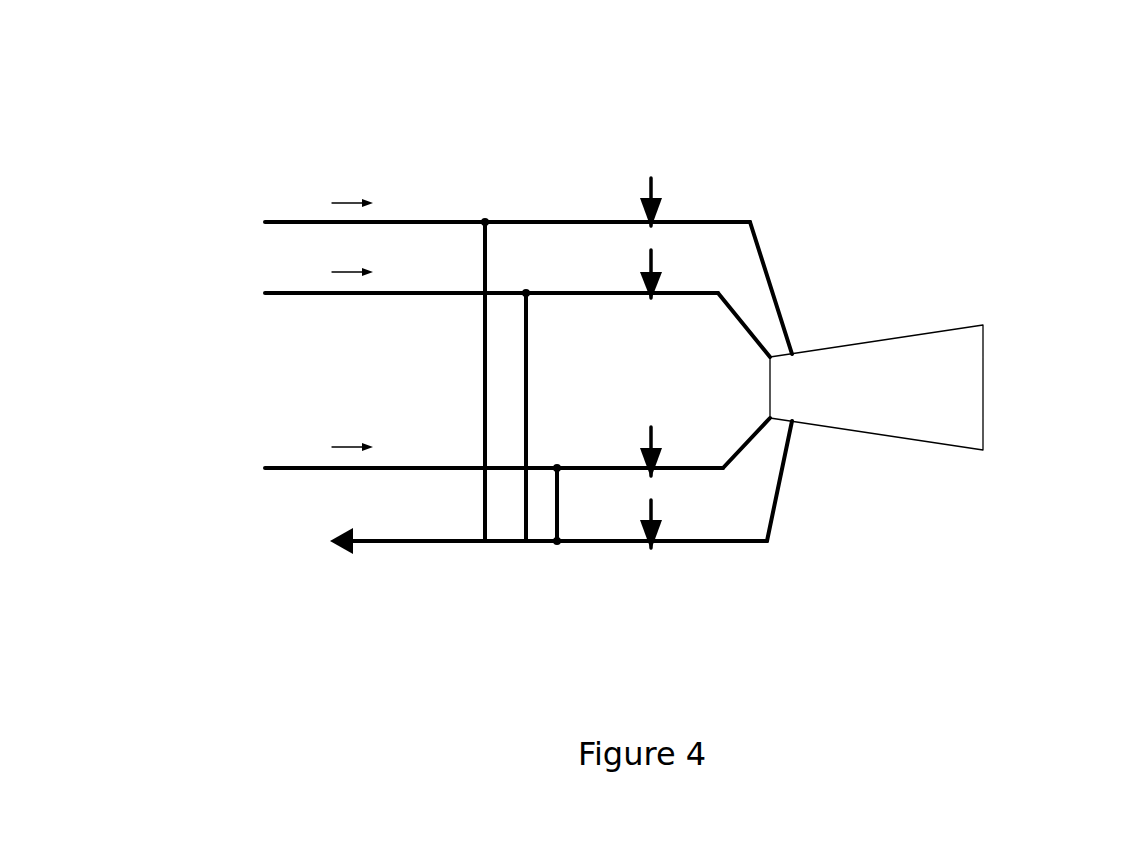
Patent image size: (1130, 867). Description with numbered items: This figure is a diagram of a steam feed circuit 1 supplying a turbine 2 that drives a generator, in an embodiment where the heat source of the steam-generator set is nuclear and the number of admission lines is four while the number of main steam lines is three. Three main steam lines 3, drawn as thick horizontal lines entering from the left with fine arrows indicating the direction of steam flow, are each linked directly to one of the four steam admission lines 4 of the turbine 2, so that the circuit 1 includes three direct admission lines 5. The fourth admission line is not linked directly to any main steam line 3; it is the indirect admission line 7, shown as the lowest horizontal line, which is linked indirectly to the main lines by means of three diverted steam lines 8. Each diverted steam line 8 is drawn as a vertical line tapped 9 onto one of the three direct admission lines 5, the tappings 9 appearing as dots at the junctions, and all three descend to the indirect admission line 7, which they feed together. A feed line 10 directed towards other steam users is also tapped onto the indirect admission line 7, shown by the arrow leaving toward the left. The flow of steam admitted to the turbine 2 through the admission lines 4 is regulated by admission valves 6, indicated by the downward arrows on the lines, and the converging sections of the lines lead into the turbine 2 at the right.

The steam feed circuit 1 is at (758, 182).
The turbine 2 is at (945, 390).
The main steam lines 3 is at (297, 467).
The steam admission lines 4 is at (760, 347).
The direct admission lines 5 is at (567, 292).
The admission valves 6 is at (643, 206).
The indirect admission line 7 is at (622, 545).
The diverted steam lines 8 is at (485, 388).
The tapping 9 is at (526, 293).
The feed line 10 is at (383, 547).